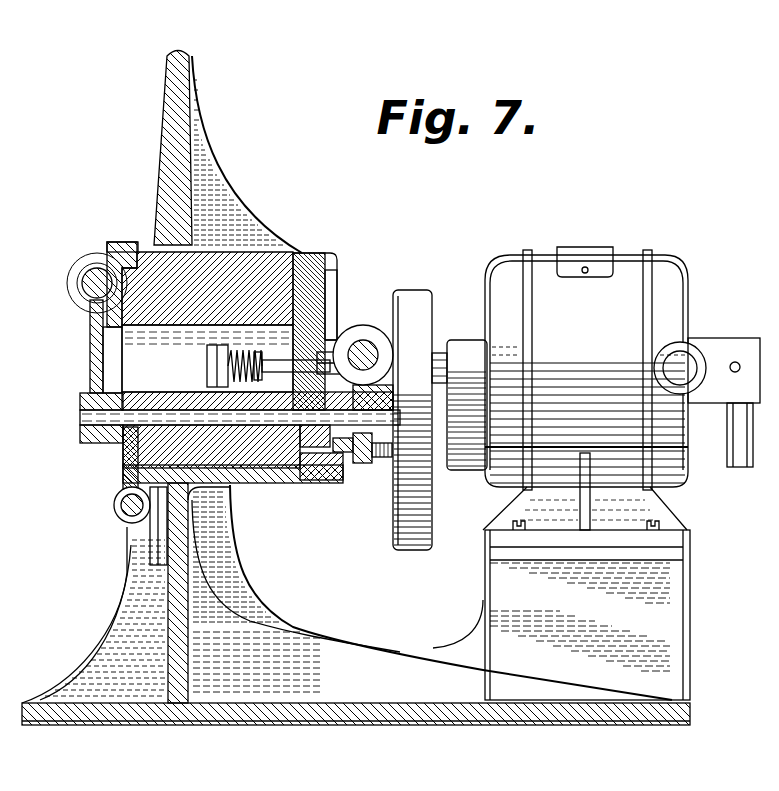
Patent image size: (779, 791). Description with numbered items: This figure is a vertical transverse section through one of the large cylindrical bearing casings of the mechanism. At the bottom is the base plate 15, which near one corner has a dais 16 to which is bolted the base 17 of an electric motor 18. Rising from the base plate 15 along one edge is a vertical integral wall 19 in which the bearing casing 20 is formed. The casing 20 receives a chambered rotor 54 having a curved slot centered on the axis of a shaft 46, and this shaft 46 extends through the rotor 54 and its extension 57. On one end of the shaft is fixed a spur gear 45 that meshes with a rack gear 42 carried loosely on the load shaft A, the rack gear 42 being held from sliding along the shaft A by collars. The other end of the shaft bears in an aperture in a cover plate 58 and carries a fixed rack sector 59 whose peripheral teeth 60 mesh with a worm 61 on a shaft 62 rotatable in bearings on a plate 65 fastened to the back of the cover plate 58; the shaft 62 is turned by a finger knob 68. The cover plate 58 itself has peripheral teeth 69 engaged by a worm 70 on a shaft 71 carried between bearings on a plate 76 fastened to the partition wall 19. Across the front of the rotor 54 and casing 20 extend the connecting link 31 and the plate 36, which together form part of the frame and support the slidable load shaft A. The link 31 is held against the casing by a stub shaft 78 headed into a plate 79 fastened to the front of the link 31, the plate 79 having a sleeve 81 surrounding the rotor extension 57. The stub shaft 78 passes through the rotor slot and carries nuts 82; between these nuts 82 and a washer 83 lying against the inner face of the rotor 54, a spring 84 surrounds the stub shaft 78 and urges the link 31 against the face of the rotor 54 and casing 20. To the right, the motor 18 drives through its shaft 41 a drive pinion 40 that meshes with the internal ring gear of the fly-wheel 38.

The base plate 15 is at (350, 712).
The dais 16 is at (673, 558).
The base 17 is at (645, 512).
The electric motor 18 is at (662, 274).
The vertical integral wall 19 is at (178, 194).
The bearing casing 20 is at (247, 252).
The connecting link 31 is at (300, 256).
The plate 36 is at (334, 266).
The fly-wheel 38 is at (433, 514).
The drive pinion 40 is at (437, 355).
The shaft 41 is at (488, 347).
The rack gear 42 is at (370, 327).
The spur gear 45 is at (375, 468).
The shaft 46 is at (167, 422).
The rotor 54 is at (238, 460).
The extension 57 is at (338, 453).
The cover plate 58 is at (124, 465).
The rack sector 59 is at (92, 359).
The peripheral teeth 60 is at (87, 300).
The worm 61 is at (82, 283).
The shaft 62 is at (100, 268).
The plate 65 is at (115, 243).
The finger knob 68 is at (80, 269).
The peripheral teeth 69 is at (123, 482).
The worm 70 is at (115, 513).
The shaft 71 is at (128, 517).
The plate 76 is at (158, 565).
The stub shaft 78 is at (329, 306).
The plate 79 is at (339, 328).
The sleeve 81 is at (309, 483).
The nuts 82 is at (198, 357).
The washer 83 is at (266, 352).
The spring 84 is at (256, 386).
The load shaft A is at (378, 343).